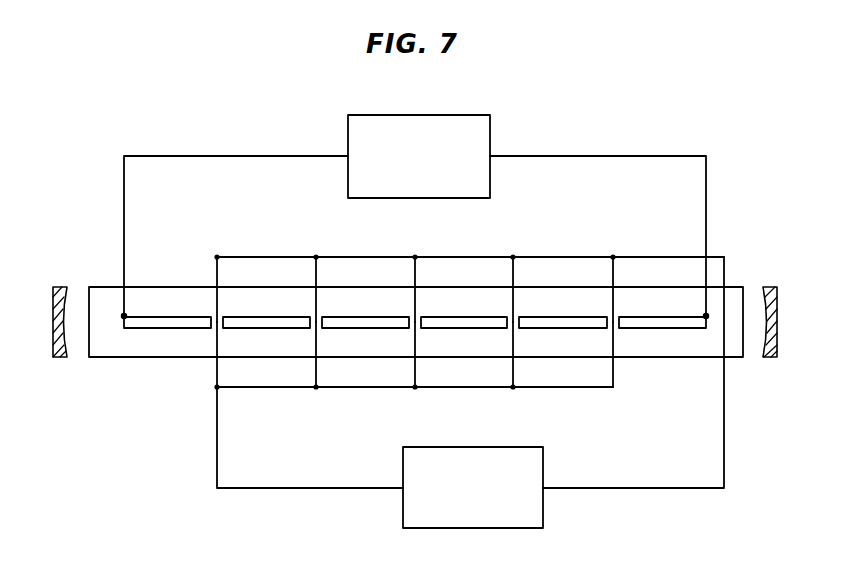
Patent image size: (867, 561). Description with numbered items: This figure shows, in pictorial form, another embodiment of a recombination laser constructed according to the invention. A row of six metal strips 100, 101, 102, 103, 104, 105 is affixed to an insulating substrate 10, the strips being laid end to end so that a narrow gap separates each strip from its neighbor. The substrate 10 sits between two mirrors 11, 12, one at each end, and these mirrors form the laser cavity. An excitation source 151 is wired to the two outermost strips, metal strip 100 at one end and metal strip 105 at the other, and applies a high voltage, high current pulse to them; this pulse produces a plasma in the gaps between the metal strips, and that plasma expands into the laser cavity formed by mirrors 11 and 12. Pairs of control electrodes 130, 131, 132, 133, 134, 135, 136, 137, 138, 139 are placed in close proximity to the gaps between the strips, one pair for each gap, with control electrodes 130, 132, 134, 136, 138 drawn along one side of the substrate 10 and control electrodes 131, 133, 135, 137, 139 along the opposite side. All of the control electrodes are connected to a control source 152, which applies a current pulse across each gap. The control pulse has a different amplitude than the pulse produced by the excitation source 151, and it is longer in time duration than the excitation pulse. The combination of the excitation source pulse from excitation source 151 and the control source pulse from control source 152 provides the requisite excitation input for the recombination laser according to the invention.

The insulating substrate 10 is at (108, 285).
The mirror 11 is at (62, 283).
The mirror 12 is at (765, 283).
The metal strip 100 is at (178, 329).
The metal strip 101 is at (282, 329).
The metal strip 102 is at (384, 329).
The metal strip 103 is at (482, 329).
The metal strip 104 is at (580, 329).
The metal strip 105 is at (678, 329).
The control electrode 130 is at (218, 272).
The control electrode 131 is at (218, 375).
The control electrode 132 is at (317, 272).
The control electrode 133 is at (317, 375).
The control electrode 134 is at (416, 272).
The control electrode 135 is at (416, 375).
The control electrode 136 is at (514, 272).
The control electrode 137 is at (514, 375).
The control electrode 138 is at (614, 272).
The control electrode 139 is at (614, 375).
The excitation source 151 is at (490, 131).
The control source 152 is at (543, 510).